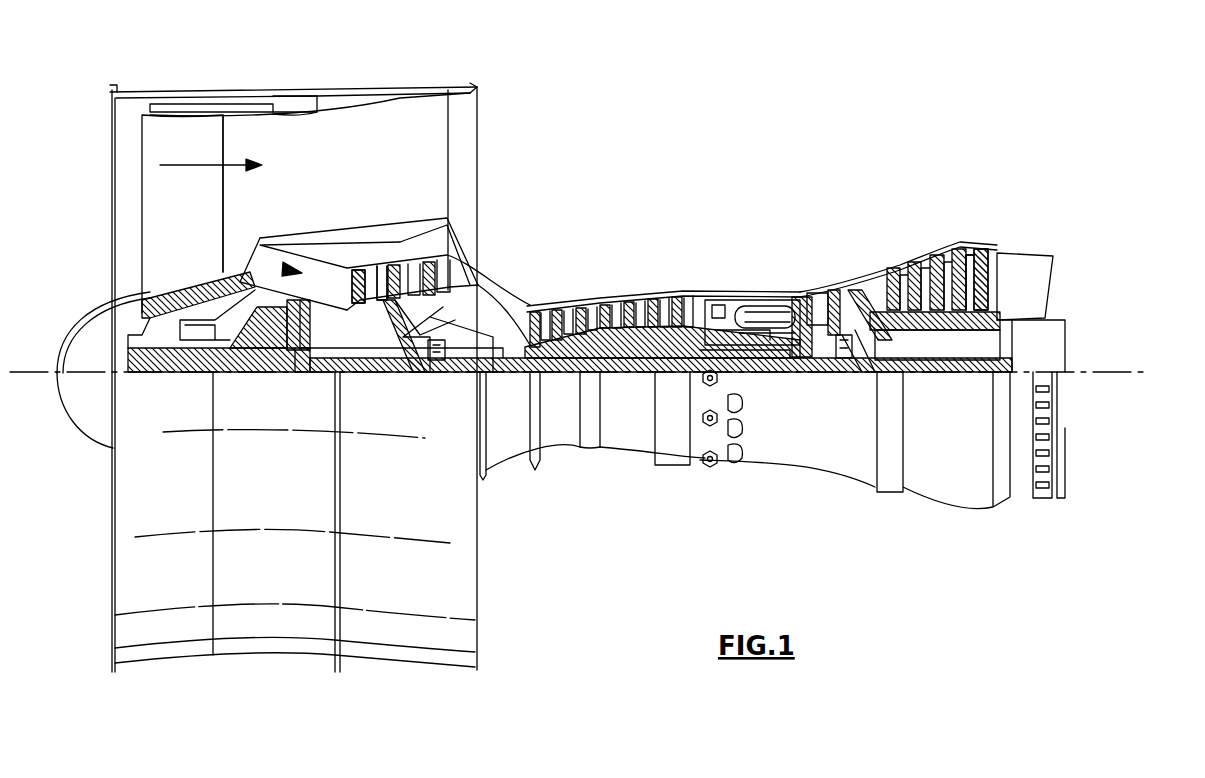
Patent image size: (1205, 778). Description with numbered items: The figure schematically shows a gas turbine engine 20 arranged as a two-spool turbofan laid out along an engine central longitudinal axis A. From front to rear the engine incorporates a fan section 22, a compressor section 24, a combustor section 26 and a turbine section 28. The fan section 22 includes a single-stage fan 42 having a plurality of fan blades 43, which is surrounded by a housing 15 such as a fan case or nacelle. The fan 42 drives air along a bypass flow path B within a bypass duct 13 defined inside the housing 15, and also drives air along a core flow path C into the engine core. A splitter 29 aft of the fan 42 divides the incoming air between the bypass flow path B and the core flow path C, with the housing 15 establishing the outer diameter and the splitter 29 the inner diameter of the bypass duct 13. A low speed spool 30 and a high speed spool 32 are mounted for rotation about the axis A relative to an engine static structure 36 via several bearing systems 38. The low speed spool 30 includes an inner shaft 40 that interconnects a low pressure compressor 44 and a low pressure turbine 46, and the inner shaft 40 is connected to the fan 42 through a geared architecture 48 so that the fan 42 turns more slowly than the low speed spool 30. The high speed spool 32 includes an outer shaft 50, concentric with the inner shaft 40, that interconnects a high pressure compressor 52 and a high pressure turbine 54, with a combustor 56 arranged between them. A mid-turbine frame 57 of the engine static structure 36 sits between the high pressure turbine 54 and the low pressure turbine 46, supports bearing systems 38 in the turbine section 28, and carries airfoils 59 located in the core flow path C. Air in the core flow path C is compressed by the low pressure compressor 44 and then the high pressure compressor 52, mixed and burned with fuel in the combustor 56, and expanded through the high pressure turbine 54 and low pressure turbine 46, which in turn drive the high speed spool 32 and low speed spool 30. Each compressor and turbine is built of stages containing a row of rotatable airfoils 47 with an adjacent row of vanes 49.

The engine central longitudinal axis A is at (1150, 372).
The bypass flow path B is at (195, 165).
The core flow path C is at (290, 268).
The bypass duct 13 is at (348, 118).
The housing 15 is at (297, 95).
The gas turbine engine 20 is at (762, 138).
The fan section 22 is at (220, 74).
The compressor section 24 is at (530, 270).
The combustor section 26 is at (748, 258).
The turbine section 28 is at (900, 225).
The splitter 29 is at (262, 240).
The low speed spool 30 is at (633, 390).
The high speed spool 32 is at (682, 345).
The engine static structure 36 is at (675, 480).
The bearing systems 38 is at (433, 360).
The inner shaft 40 is at (496, 400).
The fan 42 is at (182, 214).
The fan blades 43 is at (213, 222).
The low pressure compressor 44 is at (400, 282).
The low pressure turbine 46 is at (925, 258).
The rotatable airfoils 47 is at (358, 270).
The geared architecture 48 is at (302, 360).
The vanes 49 is at (381, 268).
The outer shaft 50 is at (762, 375).
The high pressure compressor 52 is at (612, 305).
The high pressure turbine 54 is at (813, 295).
The combustor 56 is at (752, 310).
The mid-turbine frame 57 is at (862, 283).
The airfoils 59 is at (858, 315).